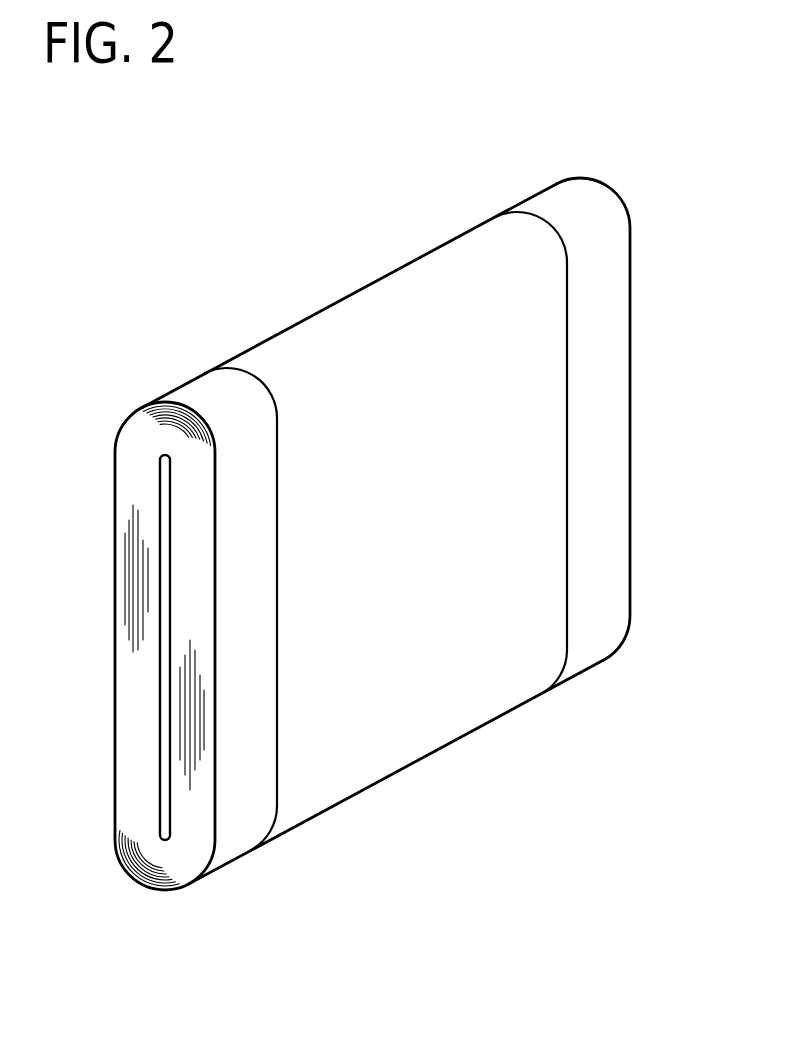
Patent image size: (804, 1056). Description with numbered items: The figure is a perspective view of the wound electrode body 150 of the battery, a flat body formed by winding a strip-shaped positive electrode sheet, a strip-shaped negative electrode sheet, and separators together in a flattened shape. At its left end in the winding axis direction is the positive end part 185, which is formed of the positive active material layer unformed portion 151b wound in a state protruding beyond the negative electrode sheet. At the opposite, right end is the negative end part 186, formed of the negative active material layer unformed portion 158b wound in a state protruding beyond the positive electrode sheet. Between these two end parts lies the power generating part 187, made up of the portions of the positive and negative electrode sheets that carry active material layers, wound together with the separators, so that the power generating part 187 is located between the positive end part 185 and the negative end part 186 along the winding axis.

The wound electrode body 150 is at (425, 557).
The positive active material layer unformed portion 151b is at (278, 653).
The positive end part 185 is at (253, 715).
The power generating part 187 is at (435, 730).
The negative active material layer unformed portion 158b is at (614, 436).
The negative end part 186 is at (614, 436).